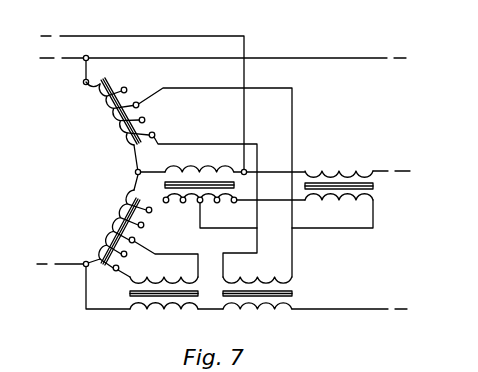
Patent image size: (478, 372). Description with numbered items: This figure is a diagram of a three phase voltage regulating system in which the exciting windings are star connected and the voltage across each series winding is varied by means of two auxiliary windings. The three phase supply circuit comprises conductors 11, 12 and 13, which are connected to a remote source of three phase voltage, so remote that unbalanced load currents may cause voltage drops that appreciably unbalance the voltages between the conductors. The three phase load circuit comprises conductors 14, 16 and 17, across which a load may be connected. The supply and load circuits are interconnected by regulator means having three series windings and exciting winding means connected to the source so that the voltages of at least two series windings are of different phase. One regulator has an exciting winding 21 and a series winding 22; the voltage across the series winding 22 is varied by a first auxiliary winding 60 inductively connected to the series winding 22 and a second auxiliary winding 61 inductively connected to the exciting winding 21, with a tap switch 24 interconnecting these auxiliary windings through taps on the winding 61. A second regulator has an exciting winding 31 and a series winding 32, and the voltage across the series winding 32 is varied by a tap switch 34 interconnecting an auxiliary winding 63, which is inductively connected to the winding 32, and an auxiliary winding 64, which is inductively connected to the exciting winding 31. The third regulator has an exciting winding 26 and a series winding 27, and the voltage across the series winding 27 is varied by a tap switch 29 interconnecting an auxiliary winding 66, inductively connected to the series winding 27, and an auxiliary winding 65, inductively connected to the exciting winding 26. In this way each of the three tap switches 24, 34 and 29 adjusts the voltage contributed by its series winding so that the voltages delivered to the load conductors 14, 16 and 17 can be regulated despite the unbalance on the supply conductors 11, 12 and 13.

The conductor 12 is at (100, 37).
The conductor 14 is at (352, 58).
The conductor 11 is at (64, 59).
The conductor 13 is at (84, 262).
The conductor 16 is at (388, 170).
The conductor 17 is at (356, 304).
The exciting winding 21 is at (204, 165).
The series winding 22 is at (336, 171).
The tap switch 24 is at (200, 212).
The exciting winding 26 is at (120, 203).
The series winding 27 is at (144, 304).
The tap switch 29 is at (134, 242).
The exciting winding 31 is at (123, 138).
The series winding 32 is at (284, 311).
The tap switch 34 is at (138, 103).
The first auxiliary winding 60 is at (376, 194).
The second auxiliary winding 61 is at (176, 195).
The auxiliary winding 63 is at (258, 278).
The auxiliary winding 64 is at (146, 130).
The auxiliary winding 65 is at (114, 271).
The auxiliary winding 66 is at (164, 269).